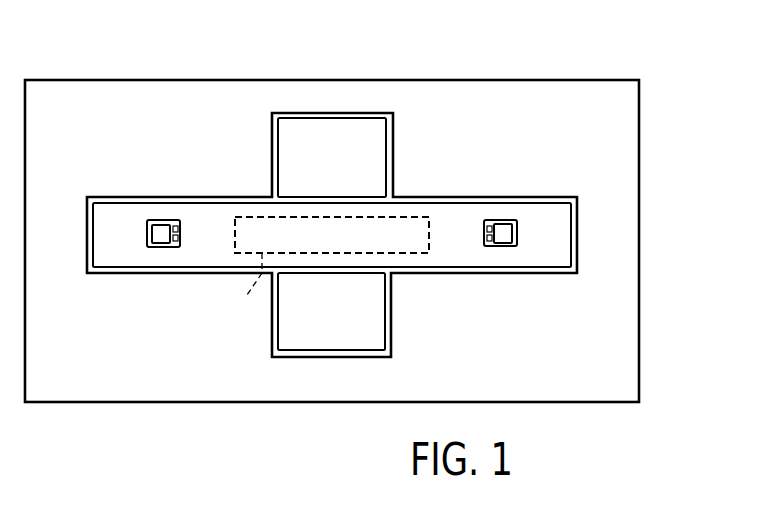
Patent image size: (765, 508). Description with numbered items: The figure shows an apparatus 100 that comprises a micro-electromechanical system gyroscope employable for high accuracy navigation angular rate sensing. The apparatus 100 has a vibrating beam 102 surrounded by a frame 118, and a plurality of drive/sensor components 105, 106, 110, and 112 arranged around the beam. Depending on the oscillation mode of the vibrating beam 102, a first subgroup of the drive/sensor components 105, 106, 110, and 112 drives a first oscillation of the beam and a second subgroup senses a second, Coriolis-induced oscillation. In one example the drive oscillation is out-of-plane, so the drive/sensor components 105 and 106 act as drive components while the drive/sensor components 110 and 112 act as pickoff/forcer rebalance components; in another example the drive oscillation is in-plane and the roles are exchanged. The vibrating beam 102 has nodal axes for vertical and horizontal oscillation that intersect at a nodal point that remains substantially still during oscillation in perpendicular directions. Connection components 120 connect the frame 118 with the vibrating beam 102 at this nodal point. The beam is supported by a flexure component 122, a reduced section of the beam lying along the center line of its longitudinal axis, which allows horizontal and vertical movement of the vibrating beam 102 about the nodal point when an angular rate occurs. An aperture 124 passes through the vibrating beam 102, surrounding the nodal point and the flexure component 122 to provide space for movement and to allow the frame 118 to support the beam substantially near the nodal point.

The apparatus 100 is at (422, 58).
The vibrating beam 102 is at (562, 255).
The drive/sensor component 105 is at (252, 230).
The drive/sensor component 106 is at (232, 285).
The drive/sensor component 110 is at (322, 128).
The drive/sensor component 112 is at (367, 320).
The frame 118 is at (79, 80).
The connection component 120 is at (163, 214).
The flexure component 122 is at (487, 220).
The aperture 124 is at (490, 247).